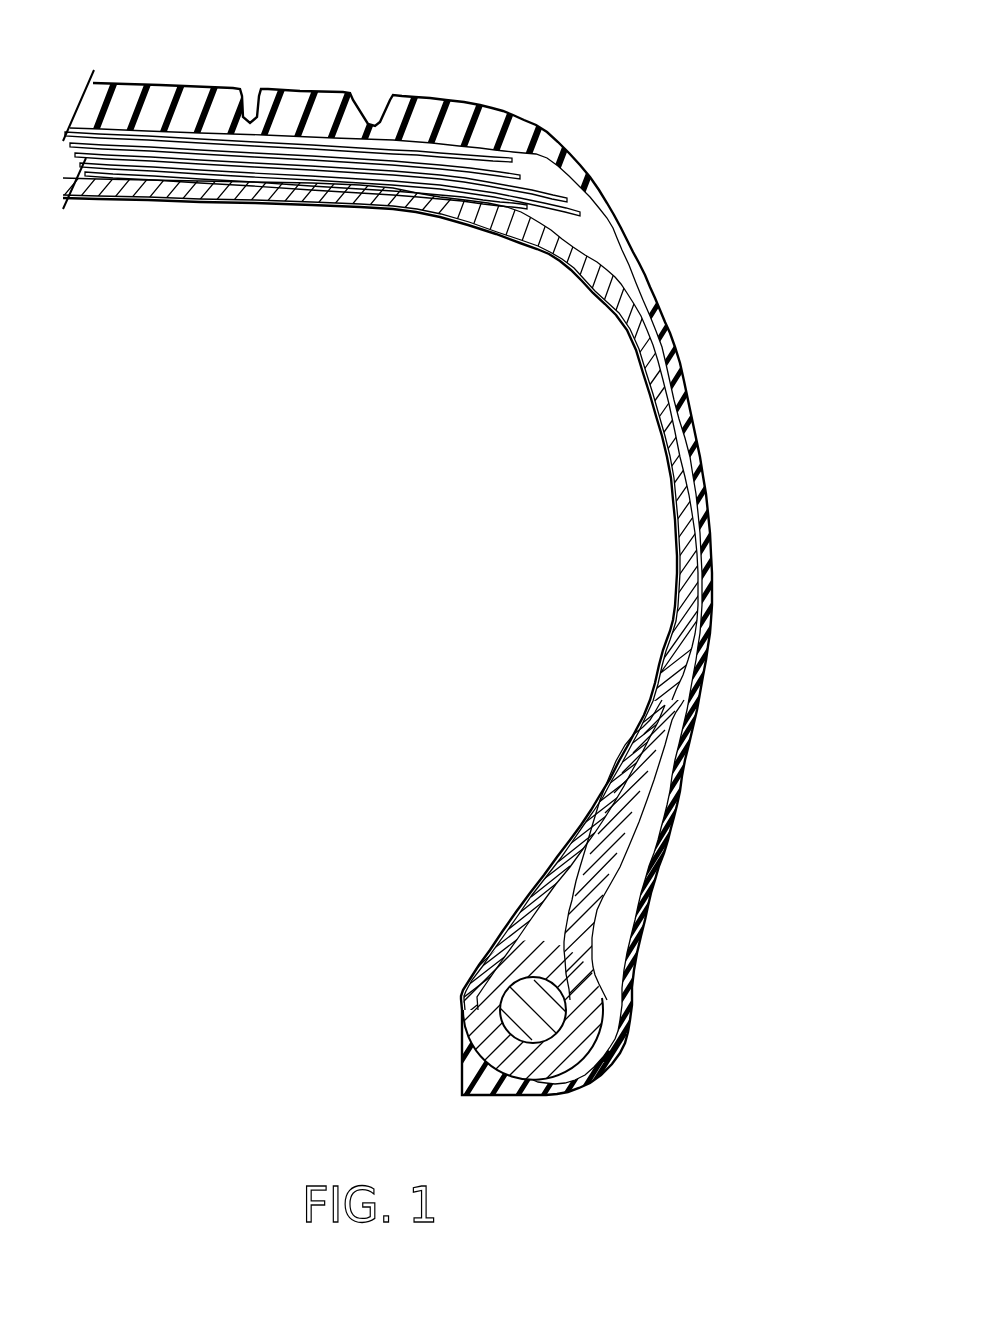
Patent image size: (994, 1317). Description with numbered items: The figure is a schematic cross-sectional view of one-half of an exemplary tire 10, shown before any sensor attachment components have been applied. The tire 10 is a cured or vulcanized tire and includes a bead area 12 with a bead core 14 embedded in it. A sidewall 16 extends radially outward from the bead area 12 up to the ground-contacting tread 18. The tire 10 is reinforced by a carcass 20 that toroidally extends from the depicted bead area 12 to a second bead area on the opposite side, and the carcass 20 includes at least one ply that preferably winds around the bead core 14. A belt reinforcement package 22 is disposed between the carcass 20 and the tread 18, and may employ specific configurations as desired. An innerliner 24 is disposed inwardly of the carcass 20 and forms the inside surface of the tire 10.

The tire 10 is at (719, 96).
The bead area 12 is at (503, 929).
The bead core 14 is at (543, 1027).
The sidewall 16 is at (717, 518).
The tread 18 is at (221, 83).
The carcass 20 is at (683, 452).
The belt reinforcement package 22 is at (430, 152).
The innerliner 24 is at (200, 200).